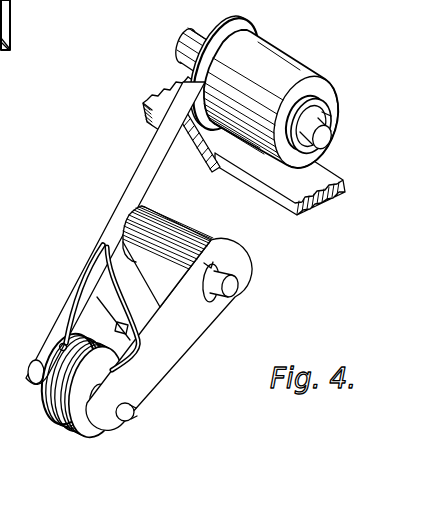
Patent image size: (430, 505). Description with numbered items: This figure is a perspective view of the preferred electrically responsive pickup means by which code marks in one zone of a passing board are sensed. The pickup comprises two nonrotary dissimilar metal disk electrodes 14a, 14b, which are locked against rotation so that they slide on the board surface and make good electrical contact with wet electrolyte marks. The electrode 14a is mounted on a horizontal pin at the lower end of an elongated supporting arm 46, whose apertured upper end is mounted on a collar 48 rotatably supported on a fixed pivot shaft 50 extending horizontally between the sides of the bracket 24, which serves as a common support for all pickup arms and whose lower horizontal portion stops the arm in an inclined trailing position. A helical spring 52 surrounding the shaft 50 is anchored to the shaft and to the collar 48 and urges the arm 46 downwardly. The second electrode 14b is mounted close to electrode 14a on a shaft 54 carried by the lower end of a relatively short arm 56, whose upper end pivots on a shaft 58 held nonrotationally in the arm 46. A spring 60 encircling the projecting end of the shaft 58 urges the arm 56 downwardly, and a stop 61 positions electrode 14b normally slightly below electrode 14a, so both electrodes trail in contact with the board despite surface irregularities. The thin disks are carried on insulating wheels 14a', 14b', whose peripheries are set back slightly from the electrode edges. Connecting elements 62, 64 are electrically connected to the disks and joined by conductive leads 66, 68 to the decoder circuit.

The bracket 24 is at (318, 178).
The collar 48 is at (288, 65).
The fixed pivot shaft 50 is at (320, 128).
The helical spring 52 is at (316, 96).
The elongated supporting arm 46 is at (141, 164).
The short arm 56 is at (158, 382).
The shaft 58 is at (236, 286).
The spring 60 is at (211, 302).
The shaft 54 is at (134, 416).
The connecting element 62 is at (33, 386).
The connecting element 64 is at (101, 437).
The conductive lead 66 is at (87, 275).
The conductive lead 68 is at (123, 291).
The stop 61 is at (117, 323).
The dissimilar metal disk electrode 14a is at (68, 396).
The insulating wheel 14a' is at (58, 383).
The dissimilar metal disk electrode 14b is at (84, 404).
The insulating wheel 14b' is at (94, 409).